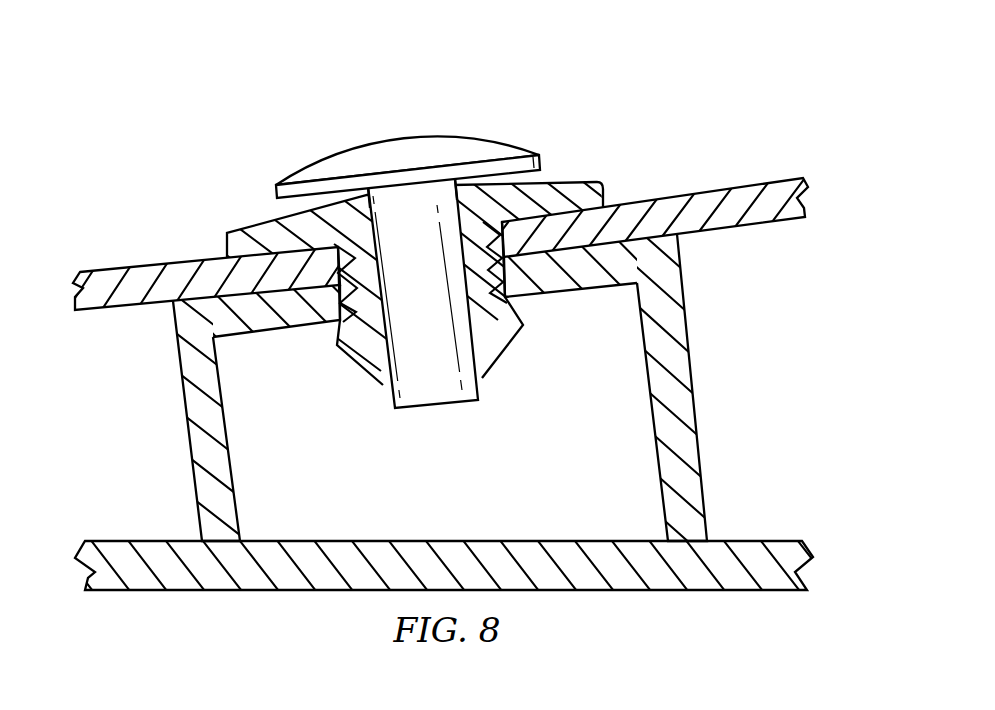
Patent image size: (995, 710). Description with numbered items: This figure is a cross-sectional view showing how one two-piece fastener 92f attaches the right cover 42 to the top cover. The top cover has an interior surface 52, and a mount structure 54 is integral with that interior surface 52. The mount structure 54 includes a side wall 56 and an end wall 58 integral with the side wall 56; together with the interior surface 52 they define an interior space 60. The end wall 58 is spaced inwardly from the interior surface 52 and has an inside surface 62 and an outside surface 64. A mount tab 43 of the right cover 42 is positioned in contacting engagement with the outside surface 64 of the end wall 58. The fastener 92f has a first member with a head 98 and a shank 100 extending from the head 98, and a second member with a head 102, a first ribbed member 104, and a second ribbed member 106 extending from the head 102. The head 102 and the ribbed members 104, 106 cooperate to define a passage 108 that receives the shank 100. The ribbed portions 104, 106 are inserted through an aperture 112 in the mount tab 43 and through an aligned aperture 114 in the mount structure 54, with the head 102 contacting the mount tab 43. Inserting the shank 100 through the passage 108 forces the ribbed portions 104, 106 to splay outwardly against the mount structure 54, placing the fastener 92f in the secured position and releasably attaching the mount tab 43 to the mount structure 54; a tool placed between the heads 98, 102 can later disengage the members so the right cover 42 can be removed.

The right cover 42 is at (638, 184).
The mount tab 43 is at (718, 192).
The interior surface 52 is at (142, 541).
The mount structure 54 is at (448, 393).
The side wall 56 is at (160, 406).
The end wall 58 is at (245, 353).
The interior space 60 is at (627, 470).
The inside surface 62 is at (570, 289).
The outside surface 64 is at (173, 290).
The two-piece fastener 92f is at (411, 238).
The head 98 is at (386, 146).
The shank 100 is at (440, 408).
The head 102 is at (253, 226).
The first ribbed member 104 is at (358, 378).
The second ribbed member 106 is at (505, 357).
The passage 108 is at (441, 197).
The aperture 112 is at (492, 238).
The aperture 114 is at (352, 284).